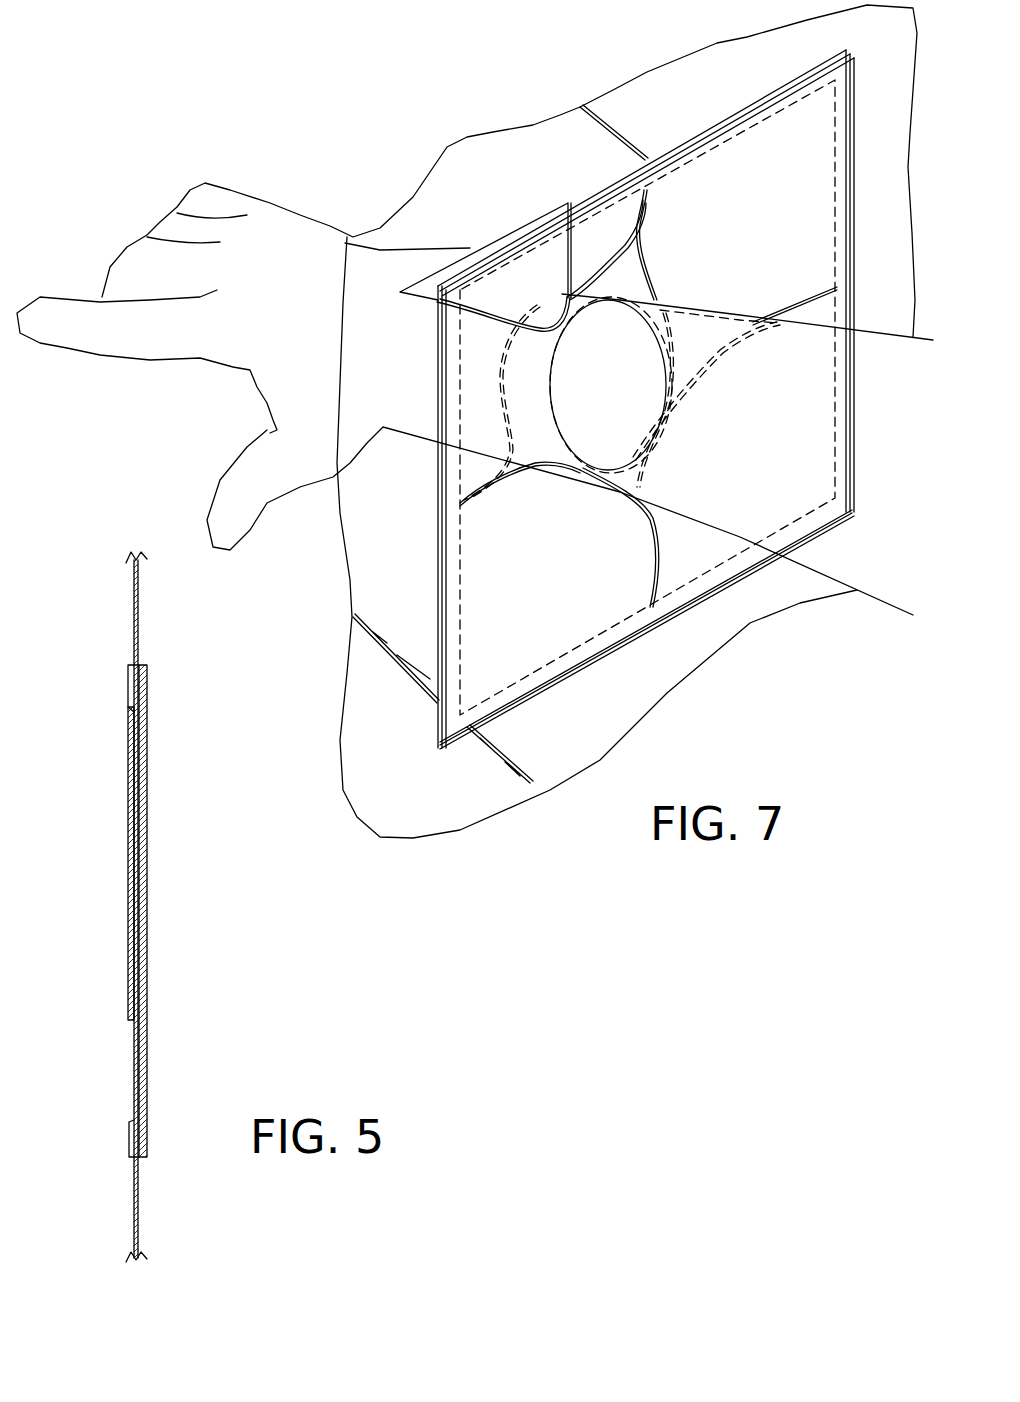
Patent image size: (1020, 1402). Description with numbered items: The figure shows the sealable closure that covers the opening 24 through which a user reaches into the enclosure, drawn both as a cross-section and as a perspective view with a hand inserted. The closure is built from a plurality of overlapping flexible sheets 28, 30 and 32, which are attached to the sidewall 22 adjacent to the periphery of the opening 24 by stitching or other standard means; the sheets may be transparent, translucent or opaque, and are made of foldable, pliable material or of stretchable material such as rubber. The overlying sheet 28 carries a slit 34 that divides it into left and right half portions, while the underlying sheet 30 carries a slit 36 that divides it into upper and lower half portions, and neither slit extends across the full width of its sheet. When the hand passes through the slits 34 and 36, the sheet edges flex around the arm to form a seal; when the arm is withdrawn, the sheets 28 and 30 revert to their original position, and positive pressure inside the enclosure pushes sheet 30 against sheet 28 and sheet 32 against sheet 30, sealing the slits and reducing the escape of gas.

In FIG. 5, the sidewall 22 is at (140, 610).
In FIG. 7, the opening 24 is at (837, 388).
In FIG. 5, the opening 24 is at (133, 707).
In FIG. 7, the flexible sheet 28 is at (793, 85).
In FIG. 5, the flexible sheet 28 is at (147, 850).
In FIG. 7, the flexible sheet 30 is at (646, 108).
In FIG. 5, the flexible sheet 30 is at (133, 803).
In FIG. 7, the flexible sheet 32 is at (470, 250).
In FIG. 5, the flexible sheet 32 is at (133, 920).
In FIG. 7, the slit 34 is at (660, 580).
In FIG. 7, the slit 36 is at (815, 300).